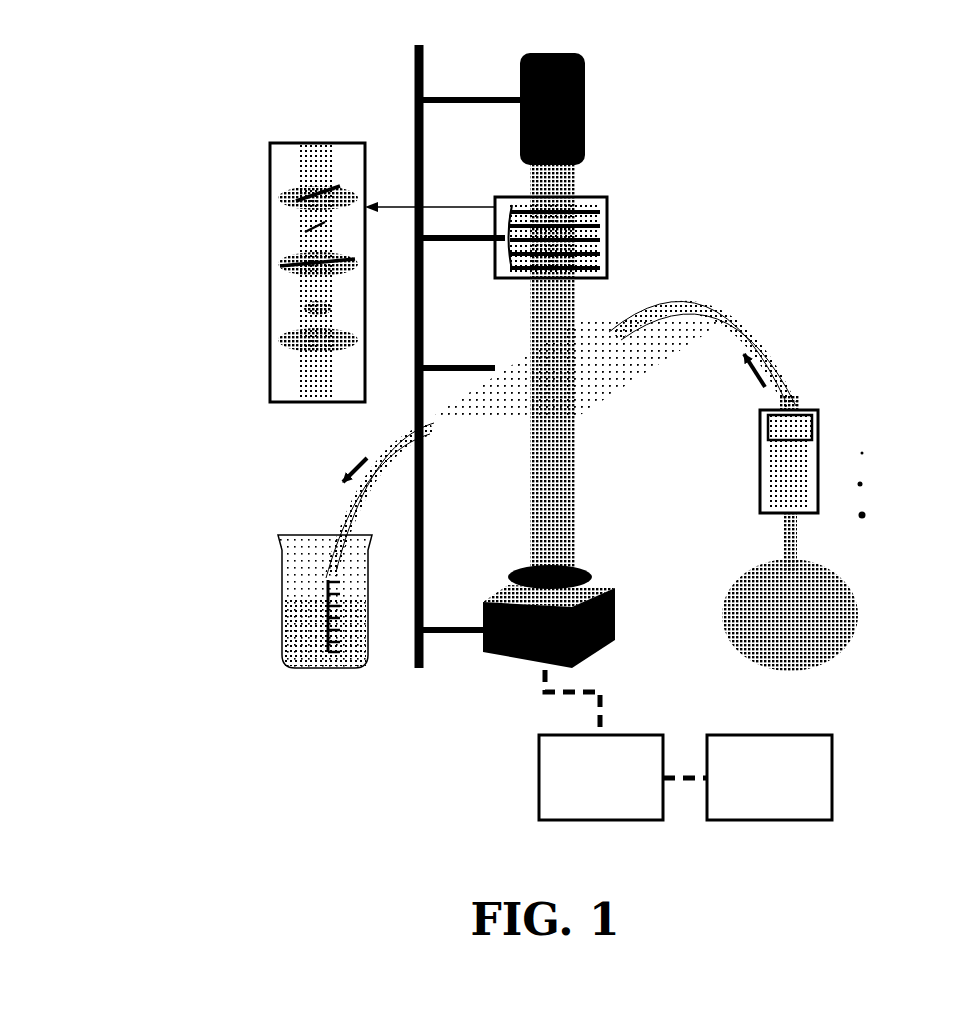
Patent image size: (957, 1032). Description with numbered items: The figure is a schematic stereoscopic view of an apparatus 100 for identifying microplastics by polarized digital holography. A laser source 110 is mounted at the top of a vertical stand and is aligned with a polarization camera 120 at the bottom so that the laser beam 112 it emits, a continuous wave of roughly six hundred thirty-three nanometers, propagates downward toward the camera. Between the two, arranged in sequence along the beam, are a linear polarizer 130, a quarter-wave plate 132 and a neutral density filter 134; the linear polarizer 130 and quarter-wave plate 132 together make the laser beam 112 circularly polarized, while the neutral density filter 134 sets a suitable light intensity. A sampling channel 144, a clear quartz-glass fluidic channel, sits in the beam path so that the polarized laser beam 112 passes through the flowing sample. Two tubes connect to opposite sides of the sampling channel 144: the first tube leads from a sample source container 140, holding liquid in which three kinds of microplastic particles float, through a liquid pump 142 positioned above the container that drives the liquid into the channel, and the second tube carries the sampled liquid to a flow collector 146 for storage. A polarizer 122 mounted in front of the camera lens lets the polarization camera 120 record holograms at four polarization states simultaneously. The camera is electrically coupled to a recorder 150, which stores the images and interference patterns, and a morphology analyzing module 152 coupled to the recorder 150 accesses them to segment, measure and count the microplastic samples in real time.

The apparatus 100 is at (230, 51).
The laser source 110 is at (557, 118).
The laser beam 112 is at (590, 180).
The polarization camera 120 is at (517, 660).
The polarizer 122 is at (615, 622).
The linear polarizer 130 is at (292, 200).
The quarter-wave plate 132 is at (292, 263).
The neutral density filter 134 is at (292, 337).
The sample source container 140 is at (827, 635).
The liquid pump 142 is at (812, 412).
The sampling channel 144 is at (628, 318).
The flow collector 146 is at (293, 628).
The recorder 150 is at (574, 797).
The morphology analyzing module 152 is at (742, 797).